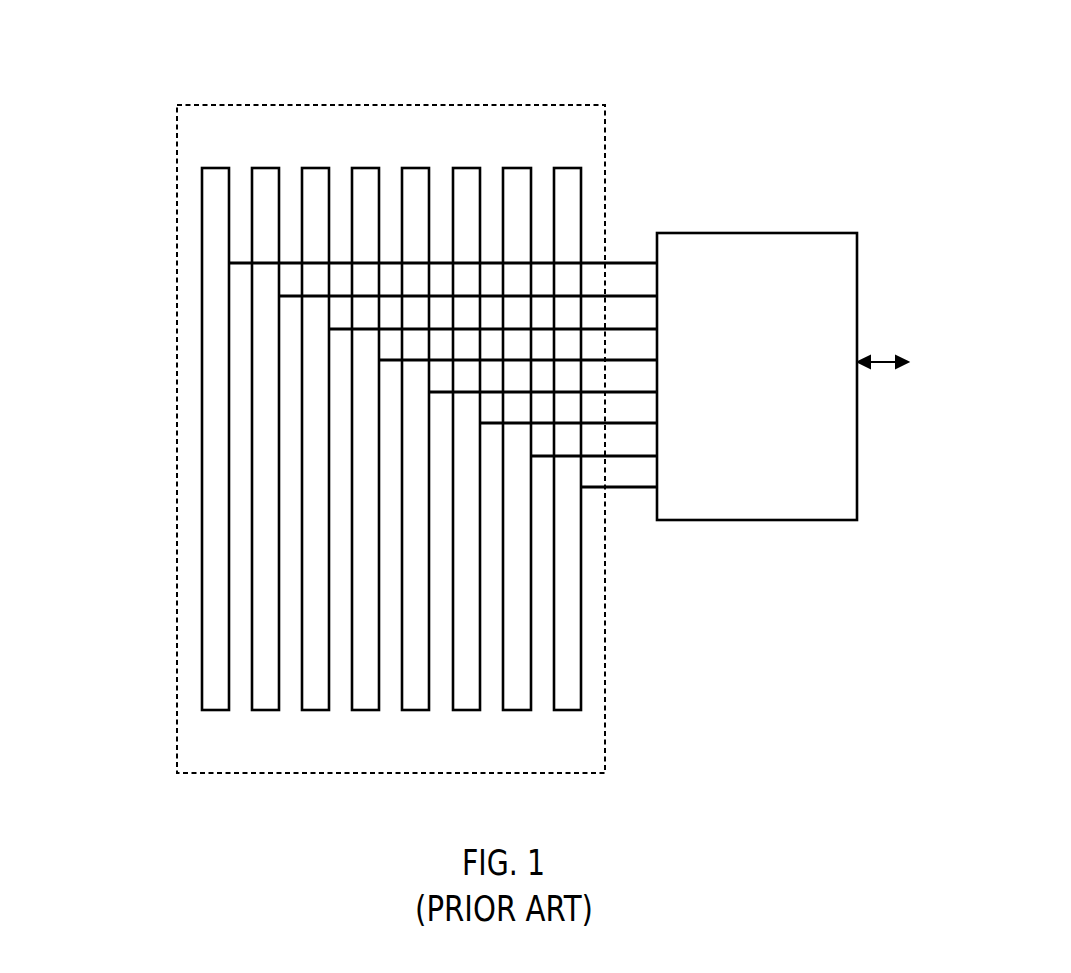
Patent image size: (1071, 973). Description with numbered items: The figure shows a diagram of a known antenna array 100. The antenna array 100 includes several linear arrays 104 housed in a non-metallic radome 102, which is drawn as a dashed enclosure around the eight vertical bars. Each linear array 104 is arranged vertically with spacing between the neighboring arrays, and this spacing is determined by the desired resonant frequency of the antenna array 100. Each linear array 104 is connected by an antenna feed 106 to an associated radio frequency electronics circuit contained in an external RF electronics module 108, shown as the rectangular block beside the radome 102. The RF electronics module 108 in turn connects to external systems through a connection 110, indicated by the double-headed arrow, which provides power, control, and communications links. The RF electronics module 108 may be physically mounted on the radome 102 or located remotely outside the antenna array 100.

The antenna array 100 is at (100, 43).
The radome 102 is at (176, 128).
The linear array 104 is at (212, 278).
The antenna feed 106 is at (617, 262).
The RF electronics module 108 is at (797, 238).
The connection 110 is at (903, 363).